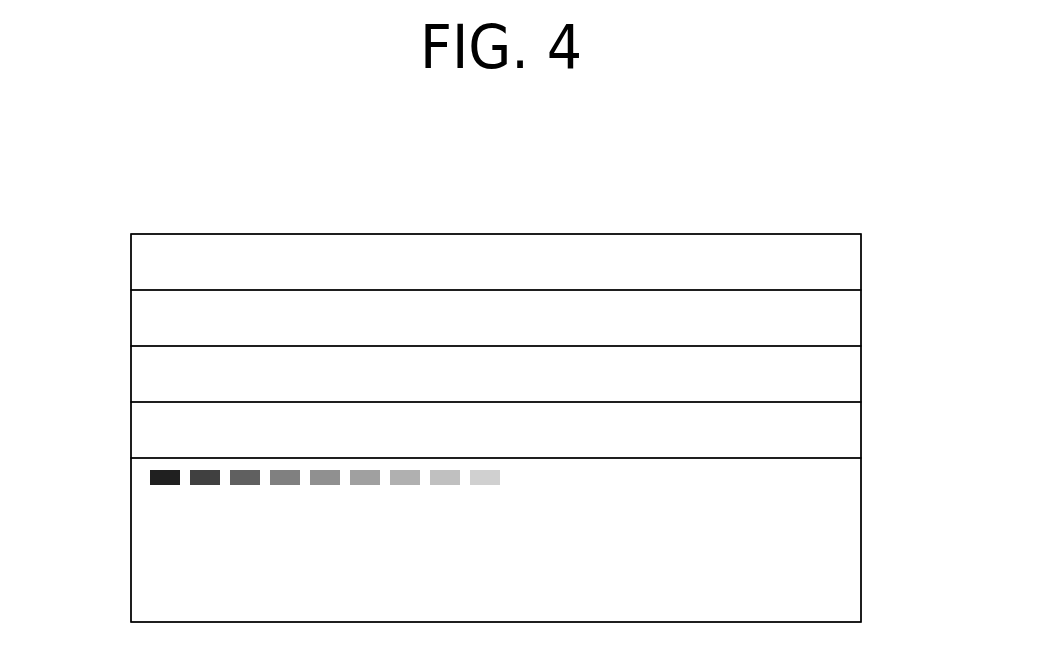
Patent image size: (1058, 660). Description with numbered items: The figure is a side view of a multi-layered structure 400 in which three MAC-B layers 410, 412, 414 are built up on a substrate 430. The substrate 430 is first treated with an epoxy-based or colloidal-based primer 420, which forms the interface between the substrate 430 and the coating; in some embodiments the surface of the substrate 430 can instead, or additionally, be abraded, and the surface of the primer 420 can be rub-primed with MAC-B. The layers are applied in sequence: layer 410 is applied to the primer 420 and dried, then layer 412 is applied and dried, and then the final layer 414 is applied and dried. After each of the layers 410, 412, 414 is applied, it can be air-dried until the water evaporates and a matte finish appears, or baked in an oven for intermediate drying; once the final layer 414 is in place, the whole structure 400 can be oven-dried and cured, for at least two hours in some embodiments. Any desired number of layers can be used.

The multi-layered structure 400 is at (108, 167).
The MAC-B layer 410 is at (862, 372).
The MAC-B layer 412 is at (862, 318).
The MAC-B layer 414 is at (862, 260).
The epoxy-based or colloidal-based primer 420 is at (862, 432).
The substrate 430 is at (862, 542).